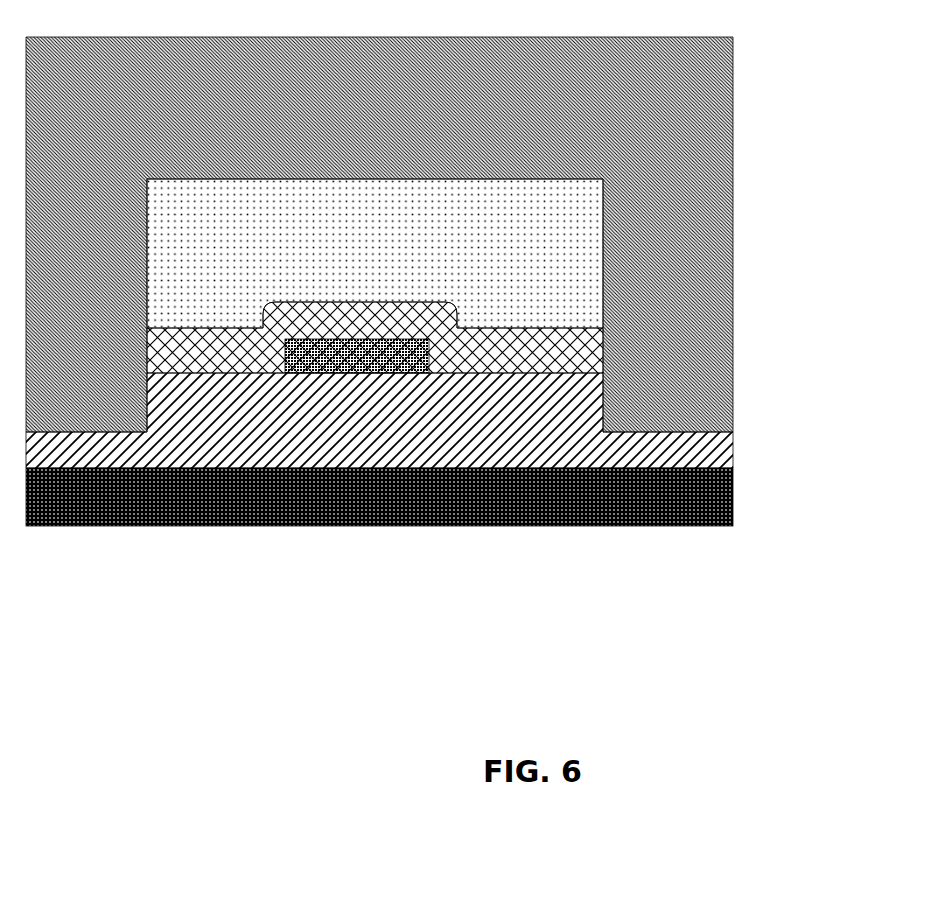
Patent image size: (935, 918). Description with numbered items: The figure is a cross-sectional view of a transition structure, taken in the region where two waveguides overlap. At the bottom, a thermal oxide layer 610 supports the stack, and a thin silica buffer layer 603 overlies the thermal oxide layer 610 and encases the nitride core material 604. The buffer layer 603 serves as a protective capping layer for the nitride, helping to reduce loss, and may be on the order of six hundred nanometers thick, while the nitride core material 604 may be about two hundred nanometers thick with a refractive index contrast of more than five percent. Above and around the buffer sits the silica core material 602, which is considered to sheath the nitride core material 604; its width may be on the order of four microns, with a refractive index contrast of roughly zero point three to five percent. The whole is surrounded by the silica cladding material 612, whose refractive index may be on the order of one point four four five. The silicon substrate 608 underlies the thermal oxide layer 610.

The silica cladding material 612 is at (716, 65).
The silica core material 602 is at (595, 199).
The silica buffer layer 603 is at (610, 348).
The nitride core material 604 is at (307, 363).
The thermal oxide layer 610 is at (604, 387).
The silicon substrate 608 is at (720, 496).